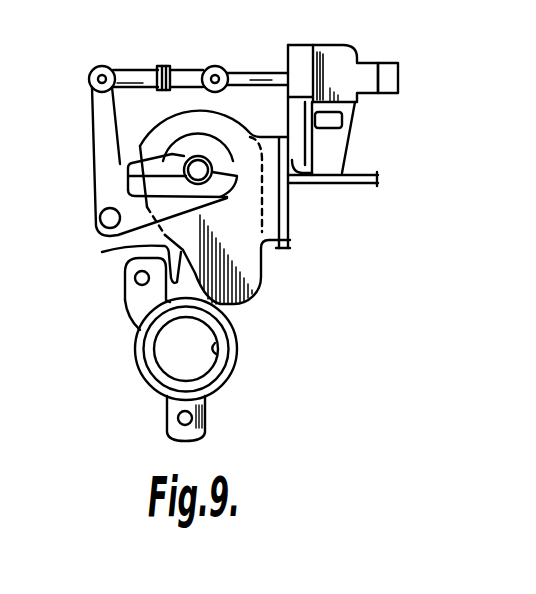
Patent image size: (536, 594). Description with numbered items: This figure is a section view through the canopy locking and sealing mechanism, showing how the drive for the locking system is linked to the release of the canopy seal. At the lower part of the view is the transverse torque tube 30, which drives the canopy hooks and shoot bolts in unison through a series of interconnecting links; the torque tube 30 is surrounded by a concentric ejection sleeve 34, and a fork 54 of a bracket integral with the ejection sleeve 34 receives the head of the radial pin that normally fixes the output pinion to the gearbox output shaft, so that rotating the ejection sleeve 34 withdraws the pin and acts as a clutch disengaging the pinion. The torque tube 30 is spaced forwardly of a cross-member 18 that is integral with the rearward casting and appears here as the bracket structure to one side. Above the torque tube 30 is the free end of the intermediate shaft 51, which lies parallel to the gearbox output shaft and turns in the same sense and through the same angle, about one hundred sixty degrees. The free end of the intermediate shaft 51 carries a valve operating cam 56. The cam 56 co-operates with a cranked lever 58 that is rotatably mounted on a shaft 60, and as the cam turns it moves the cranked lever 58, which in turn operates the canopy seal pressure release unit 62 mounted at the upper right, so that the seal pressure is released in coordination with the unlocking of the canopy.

The cross-member 18 is at (297, 192).
The torque tube 30 is at (226, 353).
The ejection sleeve 34 is at (135, 350).
The intermediate shaft 51 is at (196, 166).
The fork 54 is at (112, 251).
The valve operating cam 56 is at (126, 165).
The cranked lever 58 is at (95, 165).
The shaft 60 is at (100, 214).
The canopy seal pressure release unit 62 is at (366, 64).